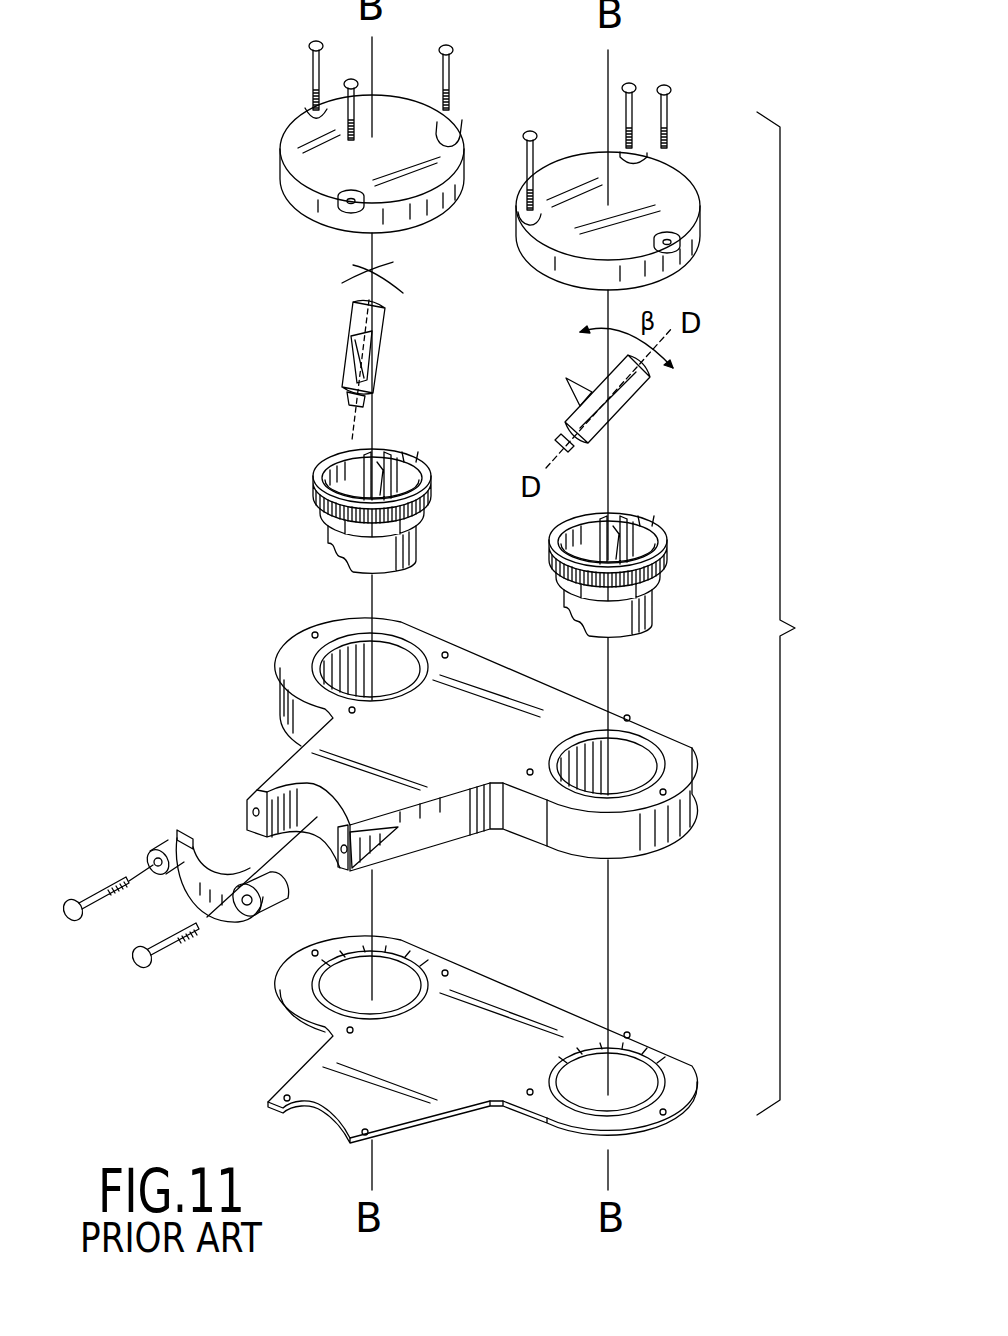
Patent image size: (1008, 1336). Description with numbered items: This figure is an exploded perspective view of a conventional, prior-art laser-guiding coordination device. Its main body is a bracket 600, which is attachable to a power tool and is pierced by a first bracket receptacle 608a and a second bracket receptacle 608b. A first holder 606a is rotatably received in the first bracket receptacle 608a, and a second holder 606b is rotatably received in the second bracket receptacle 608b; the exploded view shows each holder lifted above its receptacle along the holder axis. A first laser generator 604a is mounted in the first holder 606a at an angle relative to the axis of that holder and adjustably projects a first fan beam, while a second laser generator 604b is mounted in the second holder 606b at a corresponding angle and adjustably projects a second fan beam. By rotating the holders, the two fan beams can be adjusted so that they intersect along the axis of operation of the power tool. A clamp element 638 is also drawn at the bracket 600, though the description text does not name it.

The bracket 600 is at (807, 613).
The first laser generator 604a is at (322, 356).
The second laser generator 604b is at (648, 420).
The first holder 606a is at (296, 487).
The second holder 606b is at (658, 634).
The first bracket receptacle 608a is at (338, 672).
The second bracket receptacle 608b is at (610, 782).
The clamp 638 is at (290, 793).